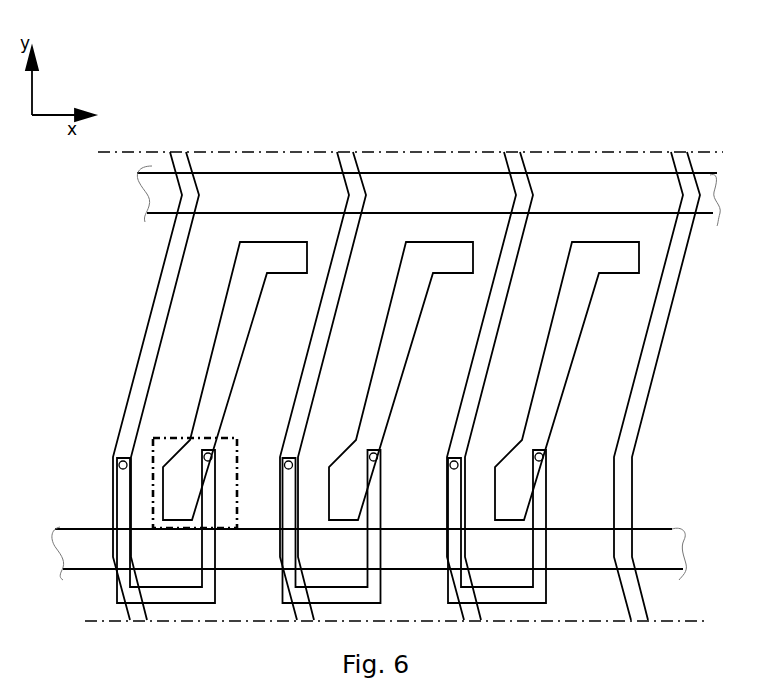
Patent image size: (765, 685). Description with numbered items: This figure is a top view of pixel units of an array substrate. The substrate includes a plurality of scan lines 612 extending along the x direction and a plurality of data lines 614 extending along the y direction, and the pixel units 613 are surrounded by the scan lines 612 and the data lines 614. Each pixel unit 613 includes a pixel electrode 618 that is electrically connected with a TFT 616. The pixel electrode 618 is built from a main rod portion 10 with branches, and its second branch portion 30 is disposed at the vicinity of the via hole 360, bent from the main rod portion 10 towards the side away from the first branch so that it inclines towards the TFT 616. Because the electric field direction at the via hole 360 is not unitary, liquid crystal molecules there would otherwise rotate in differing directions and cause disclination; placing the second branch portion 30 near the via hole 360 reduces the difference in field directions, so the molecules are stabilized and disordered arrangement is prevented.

The main rod portion 10 is at (367, 381).
The second branch portion 30 is at (208, 440).
The via hole 360 is at (212, 455).
The scan line 612 is at (87, 553).
The pixel unit 613 is at (180, 398).
The data line 614 is at (131, 424).
The TFT 616 is at (117, 503).
The pixel electrode 618 is at (207, 363).